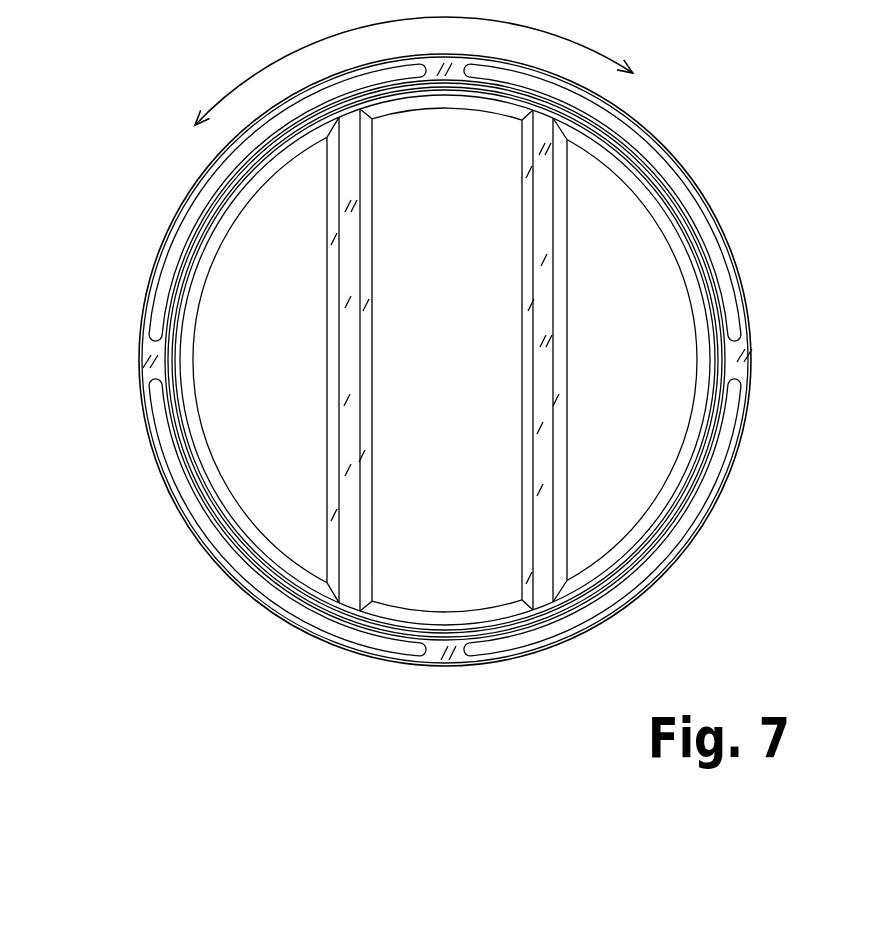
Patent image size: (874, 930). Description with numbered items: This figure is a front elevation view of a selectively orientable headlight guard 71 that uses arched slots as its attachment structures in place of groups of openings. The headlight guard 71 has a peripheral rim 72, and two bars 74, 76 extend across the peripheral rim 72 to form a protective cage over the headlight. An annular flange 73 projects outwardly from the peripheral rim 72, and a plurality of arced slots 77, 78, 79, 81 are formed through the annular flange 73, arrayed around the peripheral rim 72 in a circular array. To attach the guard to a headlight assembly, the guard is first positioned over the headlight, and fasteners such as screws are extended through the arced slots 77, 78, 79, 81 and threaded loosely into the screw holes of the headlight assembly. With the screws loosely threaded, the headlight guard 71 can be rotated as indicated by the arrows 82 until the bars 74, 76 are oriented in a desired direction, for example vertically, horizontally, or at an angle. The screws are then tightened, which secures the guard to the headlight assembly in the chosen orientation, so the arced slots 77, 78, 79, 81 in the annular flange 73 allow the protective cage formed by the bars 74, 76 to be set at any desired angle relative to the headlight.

The headlight guard 71 is at (769, 177).
The peripheral rim 72 is at (722, 372).
The annular flange 73 is at (460, 655).
The bar 74 is at (521, 313).
The bar 76 is at (371, 518).
The arced slot 77 is at (737, 286).
The arced slot 78 is at (670, 555).
The arced slot 79 is at (240, 575).
The arced slot 81 is at (190, 210).
The arrows 82 is at (262, 66).